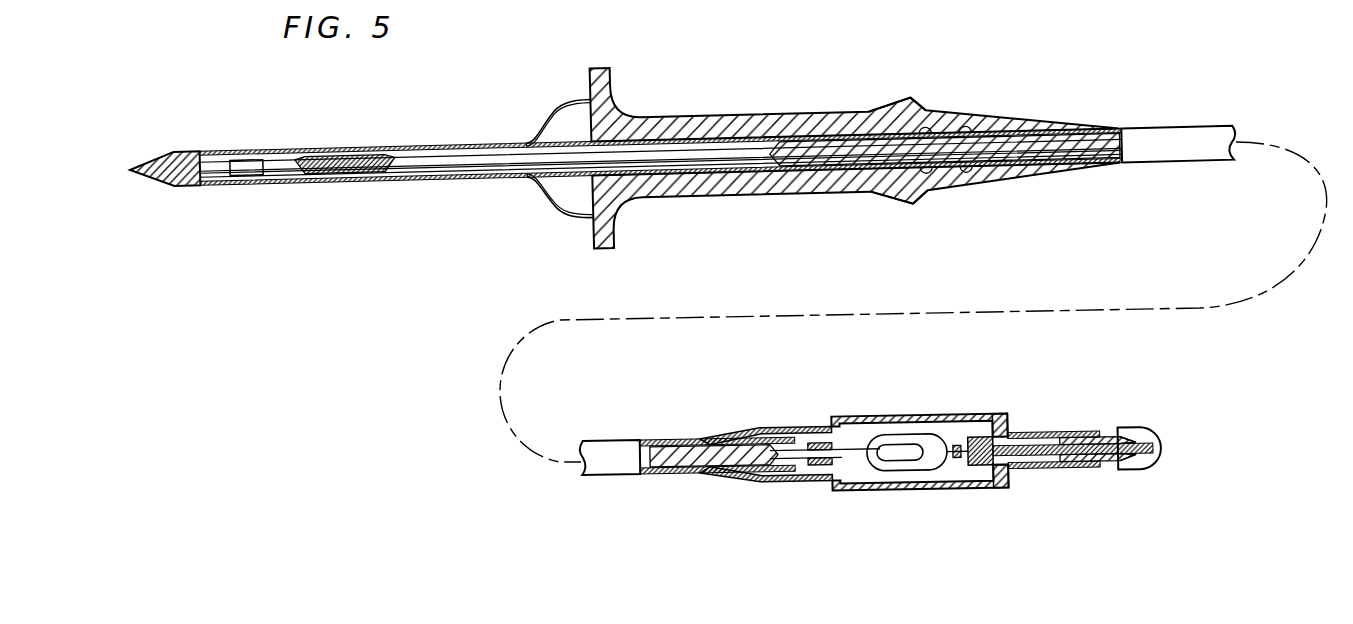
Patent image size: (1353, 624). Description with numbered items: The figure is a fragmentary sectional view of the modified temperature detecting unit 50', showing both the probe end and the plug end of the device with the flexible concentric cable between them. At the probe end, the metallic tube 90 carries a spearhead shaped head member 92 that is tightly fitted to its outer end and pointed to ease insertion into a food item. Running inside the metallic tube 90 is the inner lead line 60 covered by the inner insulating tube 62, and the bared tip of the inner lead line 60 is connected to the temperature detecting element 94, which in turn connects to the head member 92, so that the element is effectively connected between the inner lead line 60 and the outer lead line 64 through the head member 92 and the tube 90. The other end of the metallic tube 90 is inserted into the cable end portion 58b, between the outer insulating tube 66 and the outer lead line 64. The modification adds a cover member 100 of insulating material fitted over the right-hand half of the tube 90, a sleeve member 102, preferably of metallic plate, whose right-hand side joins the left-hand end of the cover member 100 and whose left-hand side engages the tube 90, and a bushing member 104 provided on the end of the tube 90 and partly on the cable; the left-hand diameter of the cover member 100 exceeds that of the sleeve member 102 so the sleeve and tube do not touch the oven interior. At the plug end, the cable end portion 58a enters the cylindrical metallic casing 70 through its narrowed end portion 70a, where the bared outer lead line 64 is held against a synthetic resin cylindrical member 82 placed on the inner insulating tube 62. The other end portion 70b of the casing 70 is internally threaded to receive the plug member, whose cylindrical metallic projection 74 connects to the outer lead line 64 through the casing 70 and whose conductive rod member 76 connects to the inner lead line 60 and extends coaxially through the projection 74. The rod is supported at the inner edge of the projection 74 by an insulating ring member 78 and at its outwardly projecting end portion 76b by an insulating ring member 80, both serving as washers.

The temperature detecting unit 50' is at (683, 292).
The end portion of the cable 58a is at (618, 463).
The end portion of the cable 58b is at (1160, 155).
The inner lead line 60 is at (278, 173).
The inner insulating tube 62 is at (438, 158).
The outer lead line 64 is at (793, 155).
The outer insulating tube 66 is at (682, 475).
The cylindrical metallic casing 70 is at (883, 420).
The narrowed end portion 70a is at (755, 437).
The other end portion 70b is at (995, 422).
The cylindrical metallic projection 74 is at (1055, 432).
The conductive rod member 76 is at (1063, 447).
The other end portion of the rod member 76b is at (1143, 457).
The insulating ring member 78 is at (990, 488).
The insulating ring member 80 is at (1110, 437).
The cylindrical member 82 is at (818, 463).
The metallic tube 90 is at (360, 183).
The spearhead shaped head member 92 is at (155, 178).
The temperature detecting element 94 is at (248, 170).
The cover member 100 is at (745, 118).
The sleeve member 102 is at (563, 118).
The bushing member 104 is at (980, 115).